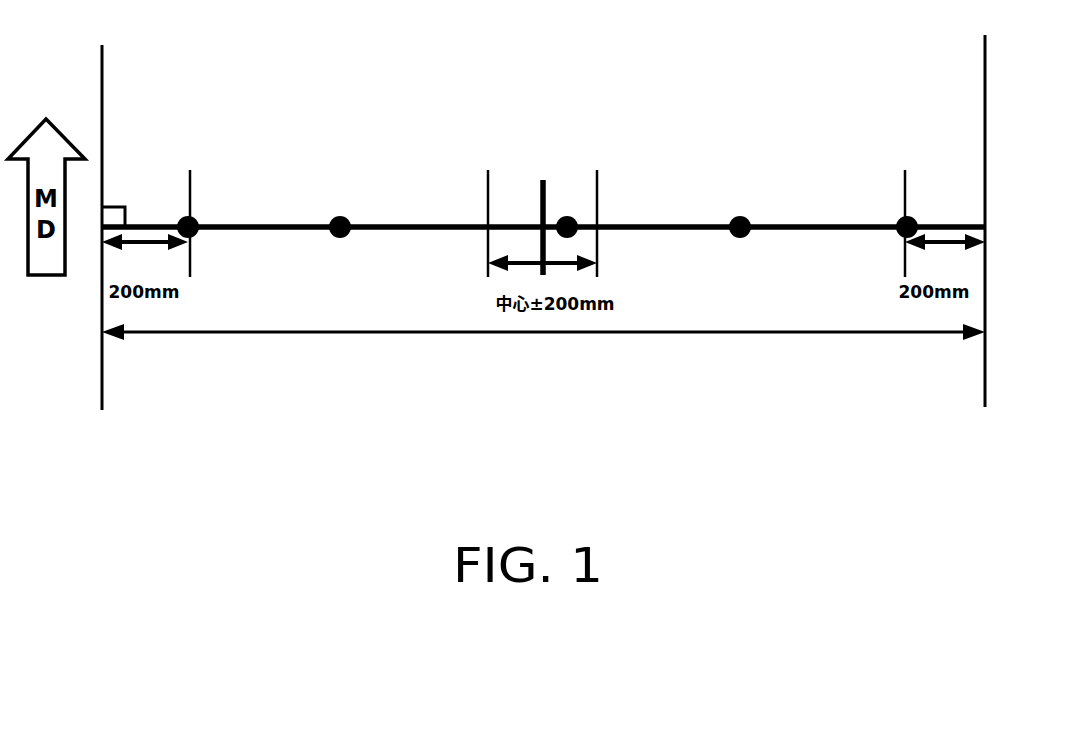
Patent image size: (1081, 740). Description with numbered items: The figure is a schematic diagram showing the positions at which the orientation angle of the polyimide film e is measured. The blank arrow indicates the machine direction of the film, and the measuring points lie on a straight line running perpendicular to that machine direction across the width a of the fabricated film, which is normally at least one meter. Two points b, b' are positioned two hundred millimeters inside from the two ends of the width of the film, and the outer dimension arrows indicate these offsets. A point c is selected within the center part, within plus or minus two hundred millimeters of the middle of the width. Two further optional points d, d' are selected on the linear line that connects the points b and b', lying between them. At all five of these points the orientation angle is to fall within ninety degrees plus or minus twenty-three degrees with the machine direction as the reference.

The width of the fabricated polyimide film a is at (543, 354).
The point inside from one end in the width direction b is at (211, 197).
The point inside from the other end in the width direction b' is at (875, 197).
The point within center part c is at (566, 212).
The optional point on the linear line connecting b and b' d is at (359, 178).
The optional point on the linear line connecting b and b' d' is at (726, 178).
The polyimide film e is at (989, 121).